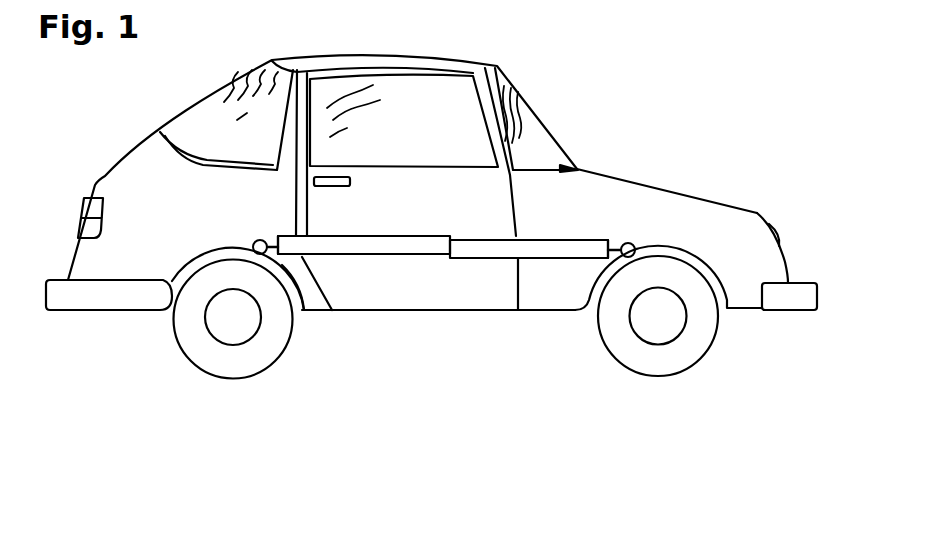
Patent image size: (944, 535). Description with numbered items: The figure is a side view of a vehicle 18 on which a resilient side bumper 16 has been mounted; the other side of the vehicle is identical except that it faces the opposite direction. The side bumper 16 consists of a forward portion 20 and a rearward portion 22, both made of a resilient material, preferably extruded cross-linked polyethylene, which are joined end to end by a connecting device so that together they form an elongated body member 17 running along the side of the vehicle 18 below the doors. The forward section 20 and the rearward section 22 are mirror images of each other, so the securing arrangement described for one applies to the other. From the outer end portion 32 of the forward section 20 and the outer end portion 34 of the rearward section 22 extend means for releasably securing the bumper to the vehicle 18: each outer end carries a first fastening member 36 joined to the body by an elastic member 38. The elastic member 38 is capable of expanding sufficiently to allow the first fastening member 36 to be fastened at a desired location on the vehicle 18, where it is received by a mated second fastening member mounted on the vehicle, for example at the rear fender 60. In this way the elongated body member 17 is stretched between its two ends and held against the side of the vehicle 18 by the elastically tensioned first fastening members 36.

The vehicle 18 is at (582, 174).
The elongated body member 17 is at (387, 236).
The vehicle side bumper 16 is at (428, 237).
The outer end portion 34 is at (274, 236).
The outer end portion 32 is at (613, 239).
The elastic member 38 is at (257, 241).
The first fastening member 36 is at (254, 247).
The rearward portion 22 is at (375, 250).
The forward portion 20 is at (471, 251).
The rear fender 60 is at (278, 266).